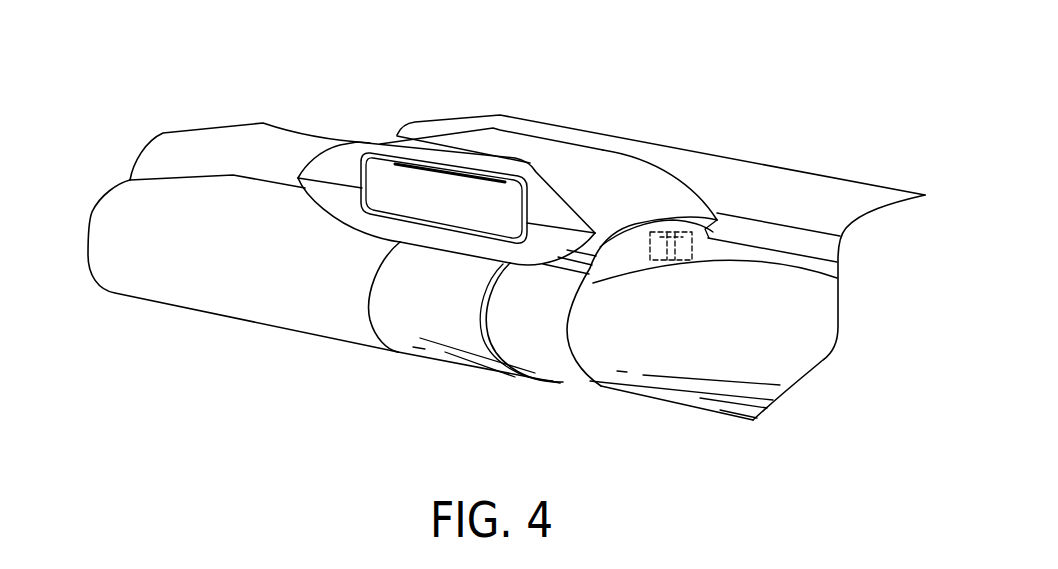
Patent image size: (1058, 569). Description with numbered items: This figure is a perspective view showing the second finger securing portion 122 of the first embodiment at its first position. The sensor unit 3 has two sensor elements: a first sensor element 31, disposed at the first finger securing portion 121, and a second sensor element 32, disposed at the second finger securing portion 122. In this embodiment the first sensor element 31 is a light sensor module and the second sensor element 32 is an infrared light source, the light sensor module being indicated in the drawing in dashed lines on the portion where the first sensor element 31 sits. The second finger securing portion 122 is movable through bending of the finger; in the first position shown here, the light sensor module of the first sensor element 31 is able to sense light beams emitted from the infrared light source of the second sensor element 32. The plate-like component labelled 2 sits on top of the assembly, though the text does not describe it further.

The top plate 2 is at (497, 122).
The sensor unit 3 is at (668, 127).
The second sensor element 32 is at (600, 233).
The first sensor element 31 is at (693, 248).
The second finger securing portion 122 is at (417, 317).
The first finger securing portion 121 is at (693, 352).